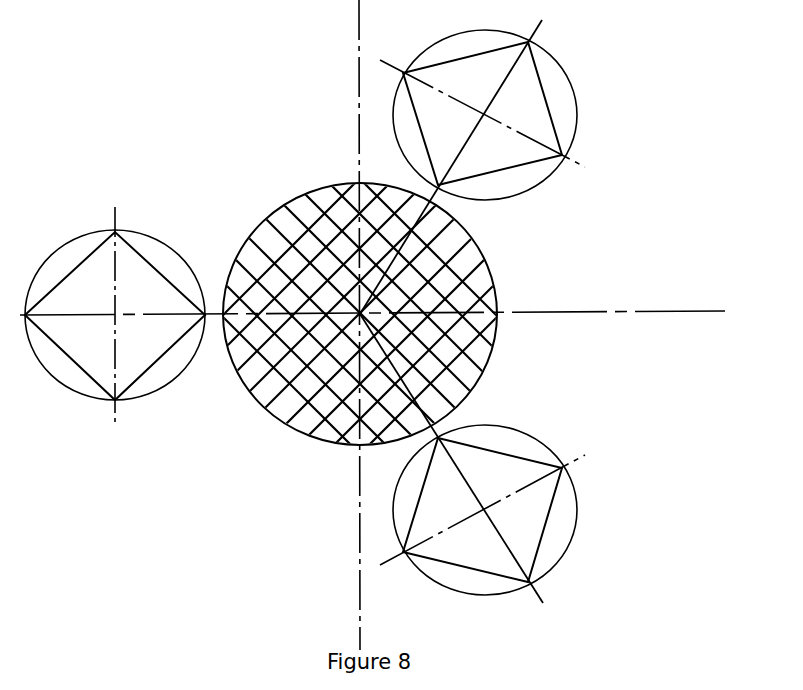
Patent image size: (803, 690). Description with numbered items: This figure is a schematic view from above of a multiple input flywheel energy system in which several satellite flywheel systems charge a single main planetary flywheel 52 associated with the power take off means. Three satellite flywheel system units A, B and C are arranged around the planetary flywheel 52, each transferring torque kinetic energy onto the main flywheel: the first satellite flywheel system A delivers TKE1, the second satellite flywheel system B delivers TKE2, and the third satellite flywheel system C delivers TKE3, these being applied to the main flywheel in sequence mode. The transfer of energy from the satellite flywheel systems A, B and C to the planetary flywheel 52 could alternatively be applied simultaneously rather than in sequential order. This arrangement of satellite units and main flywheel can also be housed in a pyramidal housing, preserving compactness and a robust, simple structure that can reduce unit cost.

The planetary flywheel 52 is at (258, 216).
The satellite flywheel system A is at (115, 316).
The satellite flywheel system B is at (472, 167).
The satellite flywheel system C is at (472, 458).
The torque kinetic energy TKE1 is at (115, 316).
The torque kinetic energy TKE2 is at (482, 113).
The torque kinetic energy TKE3 is at (482, 510).